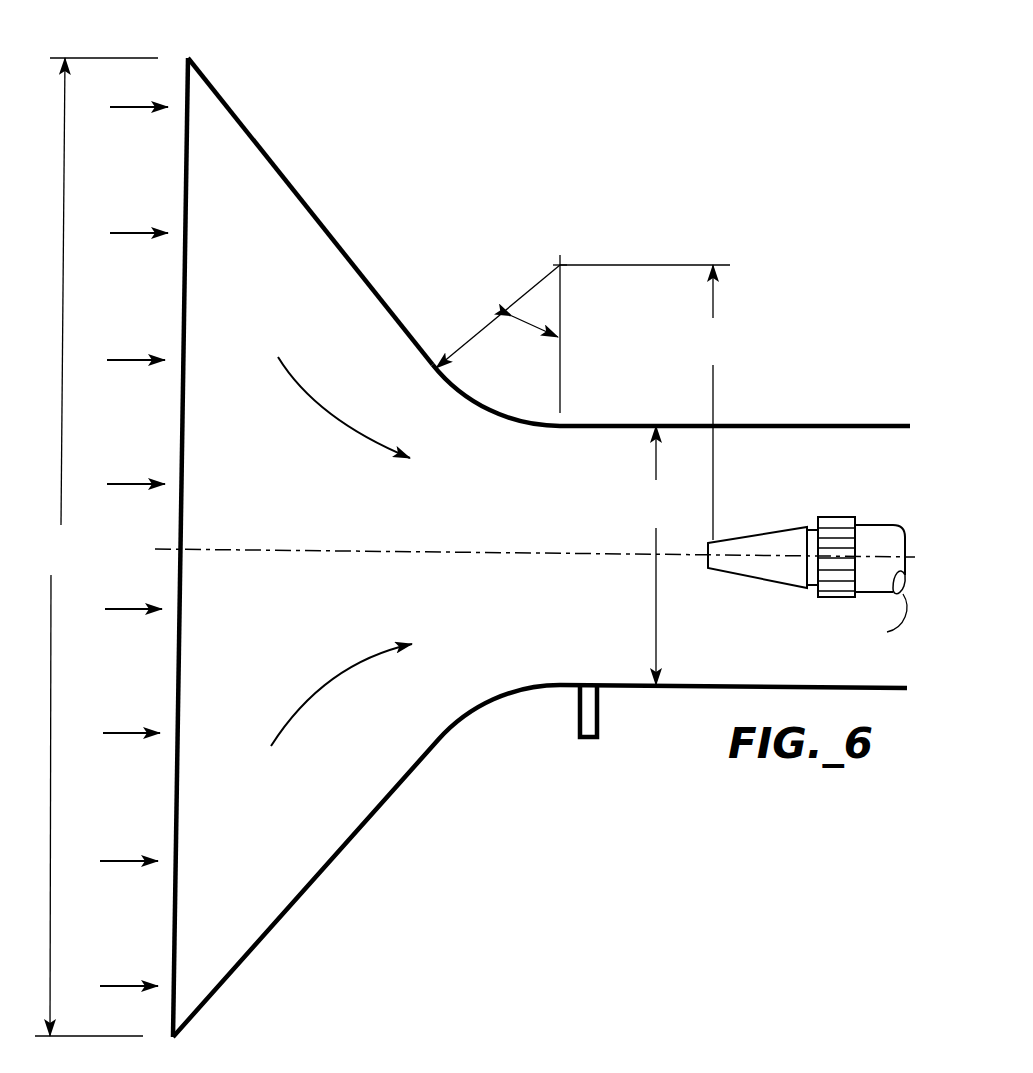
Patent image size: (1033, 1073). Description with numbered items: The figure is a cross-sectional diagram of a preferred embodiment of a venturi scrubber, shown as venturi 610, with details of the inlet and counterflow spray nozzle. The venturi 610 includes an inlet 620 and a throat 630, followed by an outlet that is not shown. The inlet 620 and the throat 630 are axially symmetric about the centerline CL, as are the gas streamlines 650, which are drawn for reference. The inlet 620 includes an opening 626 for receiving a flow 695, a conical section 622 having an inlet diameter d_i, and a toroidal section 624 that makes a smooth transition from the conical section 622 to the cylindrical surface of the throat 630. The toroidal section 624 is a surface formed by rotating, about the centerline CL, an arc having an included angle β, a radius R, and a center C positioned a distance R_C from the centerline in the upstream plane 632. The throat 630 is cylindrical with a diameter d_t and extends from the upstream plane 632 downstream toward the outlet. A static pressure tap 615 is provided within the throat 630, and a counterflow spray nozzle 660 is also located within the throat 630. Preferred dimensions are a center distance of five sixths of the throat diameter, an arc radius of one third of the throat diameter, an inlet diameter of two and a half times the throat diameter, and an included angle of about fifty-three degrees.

The venturi 610 is at (707, 218).
The static pressure tap 615 is at (597, 700).
The inlet 620 is at (392, 287).
The conical section 622 is at (310, 207).
The toroidal section 624 is at (470, 398).
The opening 626 is at (185, 83).
The throat 630 is at (787, 425).
The upstream plane 632 is at (560, 408).
The gas streamlines 650 is at (329, 679).
The counterflow spray nozzle 660 is at (837, 518).
The flow 695 is at (125, 482).